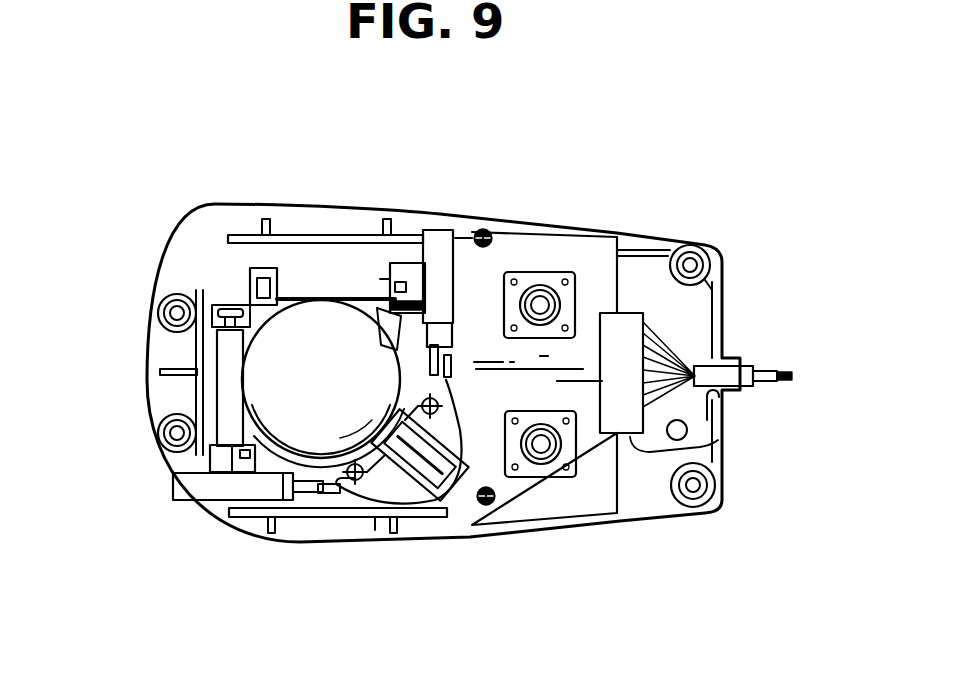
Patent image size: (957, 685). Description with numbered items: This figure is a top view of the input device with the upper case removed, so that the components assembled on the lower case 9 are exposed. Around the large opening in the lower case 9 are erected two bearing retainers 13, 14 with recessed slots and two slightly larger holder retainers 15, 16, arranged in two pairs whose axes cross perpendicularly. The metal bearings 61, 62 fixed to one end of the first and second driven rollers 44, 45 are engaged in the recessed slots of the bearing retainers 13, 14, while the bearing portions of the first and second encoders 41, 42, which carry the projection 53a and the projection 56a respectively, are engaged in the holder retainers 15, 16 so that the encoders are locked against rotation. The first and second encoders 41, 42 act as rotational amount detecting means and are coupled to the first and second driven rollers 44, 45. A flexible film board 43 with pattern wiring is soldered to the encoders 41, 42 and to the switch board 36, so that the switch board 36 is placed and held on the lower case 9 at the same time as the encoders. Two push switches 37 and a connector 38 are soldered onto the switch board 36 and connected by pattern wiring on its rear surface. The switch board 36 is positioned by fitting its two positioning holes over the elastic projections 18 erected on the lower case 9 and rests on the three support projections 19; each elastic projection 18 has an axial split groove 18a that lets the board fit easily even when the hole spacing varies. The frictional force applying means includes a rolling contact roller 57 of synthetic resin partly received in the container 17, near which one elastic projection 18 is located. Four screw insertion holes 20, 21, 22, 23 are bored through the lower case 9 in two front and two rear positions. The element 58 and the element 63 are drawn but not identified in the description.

The lower case 9 is at (672, 244).
The bearing retainer 13 is at (262, 268).
The bearing retainer 14 is at (212, 306).
The holder retainer 15 is at (407, 262).
The holder retainer 16 is at (205, 462).
The container 17 is at (418, 500).
The elastic projection 18 is at (481, 228).
The split groove 18a is at (485, 240).
The support projection 19 is at (760, 366).
The screw insertion hole 20 is at (700, 246).
The screw insertion hole 21 is at (695, 490).
The screw insertion hole 22 is at (160, 312).
The screw insertion hole 23 is at (166, 435).
The switch board 36 is at (580, 500).
The push switch 37 is at (540, 290).
The connector 38 is at (719, 443).
The first encoder 41 is at (440, 230).
The second encoder 42 is at (197, 500).
The flexible film board 43 is at (348, 514).
The first driven roller 44 is at (306, 278).
The second driven roller 45 is at (208, 372).
The projection 53a is at (386, 266).
The projection 56a is at (226, 476).
The rolling contact roller 57 is at (375, 532).
The sensor unit 58 is at (462, 498).
The metal bearing 61 is at (226, 300).
The metal bearing 62 is at (220, 308).
The lens barrel 63 is at (312, 410).